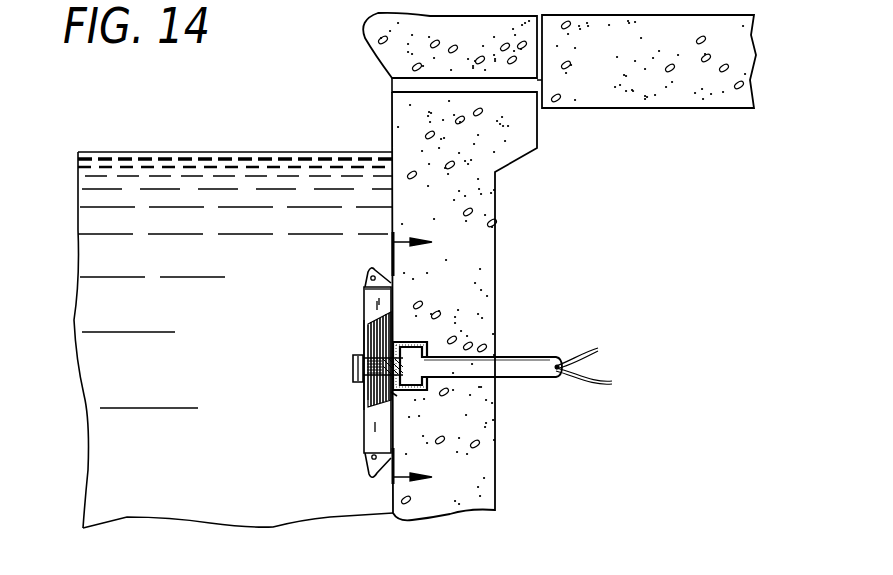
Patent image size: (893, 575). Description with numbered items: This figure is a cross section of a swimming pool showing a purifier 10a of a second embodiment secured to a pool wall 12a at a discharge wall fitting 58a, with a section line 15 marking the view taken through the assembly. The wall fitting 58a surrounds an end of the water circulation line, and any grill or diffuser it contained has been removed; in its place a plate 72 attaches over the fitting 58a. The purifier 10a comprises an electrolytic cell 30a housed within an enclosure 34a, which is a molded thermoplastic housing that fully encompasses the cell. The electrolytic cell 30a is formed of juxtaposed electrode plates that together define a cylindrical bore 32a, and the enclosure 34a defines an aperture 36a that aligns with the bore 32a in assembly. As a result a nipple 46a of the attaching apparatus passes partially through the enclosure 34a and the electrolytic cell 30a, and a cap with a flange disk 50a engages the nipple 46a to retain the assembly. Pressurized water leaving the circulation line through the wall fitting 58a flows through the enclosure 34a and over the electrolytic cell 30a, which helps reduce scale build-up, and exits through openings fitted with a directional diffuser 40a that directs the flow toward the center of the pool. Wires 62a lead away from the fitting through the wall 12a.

The purifier 10a is at (332, 350).
The wall 12a is at (487, 500).
The section line 15 is at (428, 361).
The electrolytic cell 30a is at (370, 422).
The cylindrical bore 32a is at (362, 346).
The enclosure 34a is at (363, 296).
The aperture 36a is at (368, 402).
The directional diffuser 40a is at (371, 268).
The nipple 46a is at (398, 338).
The flange disk 50a is at (356, 382).
The wall fitting 58a is at (429, 336).
The electrical wires 62a is at (598, 348).
The plate 72 is at (394, 401).